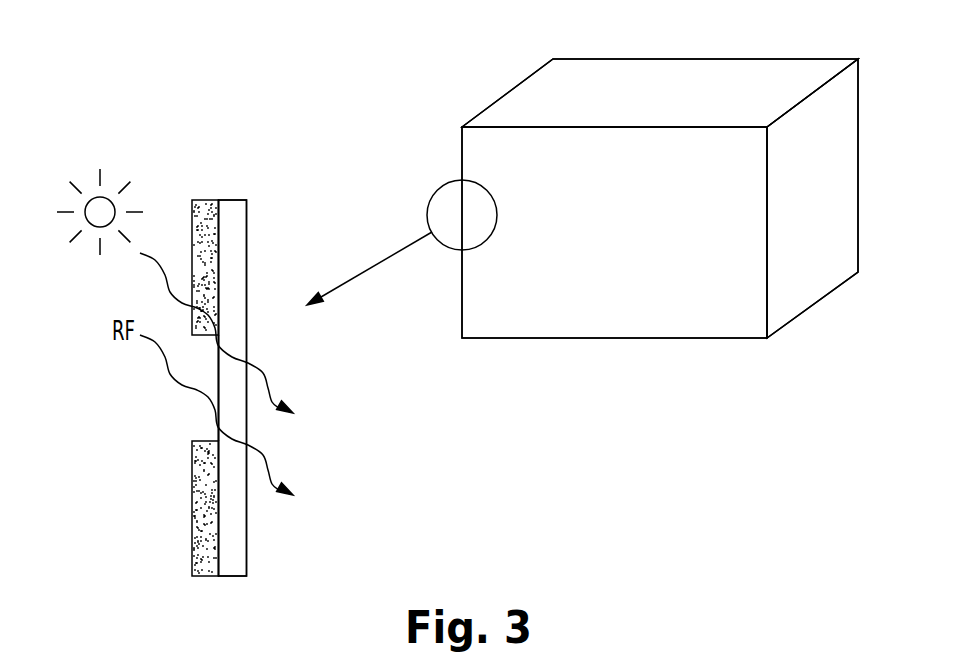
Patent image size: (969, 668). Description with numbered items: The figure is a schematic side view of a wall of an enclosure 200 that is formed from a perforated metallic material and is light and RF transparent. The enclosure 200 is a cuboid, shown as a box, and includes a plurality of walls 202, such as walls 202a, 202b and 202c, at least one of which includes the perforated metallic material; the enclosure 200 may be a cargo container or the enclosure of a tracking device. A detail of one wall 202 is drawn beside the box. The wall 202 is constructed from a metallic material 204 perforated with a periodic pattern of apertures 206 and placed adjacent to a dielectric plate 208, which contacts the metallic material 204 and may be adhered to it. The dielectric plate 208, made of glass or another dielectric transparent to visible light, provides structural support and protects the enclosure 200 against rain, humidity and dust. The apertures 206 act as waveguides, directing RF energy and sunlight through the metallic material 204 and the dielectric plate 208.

The enclosure 200 is at (654, 355).
The wall 202 is at (462, 157).
The wall 202a is at (493, 312).
The wall 202b is at (810, 285).
The wall 202c is at (584, 85).
The metallic material 204 is at (177, 531).
The apertures 206 is at (202, 441).
The dielectric plate 208 is at (262, 530).